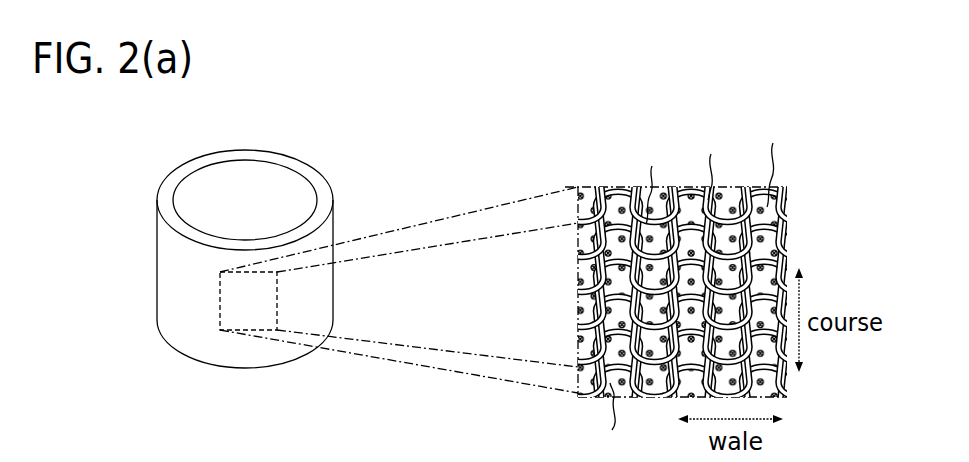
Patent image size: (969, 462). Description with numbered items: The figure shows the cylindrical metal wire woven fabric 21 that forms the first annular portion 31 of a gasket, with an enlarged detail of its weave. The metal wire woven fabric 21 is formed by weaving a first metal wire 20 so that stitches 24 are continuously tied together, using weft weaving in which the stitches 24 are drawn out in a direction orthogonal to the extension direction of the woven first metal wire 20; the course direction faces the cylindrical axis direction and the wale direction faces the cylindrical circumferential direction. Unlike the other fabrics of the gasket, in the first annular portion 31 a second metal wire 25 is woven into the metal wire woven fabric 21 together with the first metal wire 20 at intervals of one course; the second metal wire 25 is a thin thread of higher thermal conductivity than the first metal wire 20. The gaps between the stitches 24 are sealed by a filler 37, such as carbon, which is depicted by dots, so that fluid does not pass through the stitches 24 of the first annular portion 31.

The first annular portion 31 is at (146, 235).
The metal wire woven fabric 21 is at (300, 161).
The first metal wire 20 is at (708, 200).
The second metal wire 25 is at (646, 224).
The filler 37 is at (767, 207).
The stitch 24 is at (610, 383).